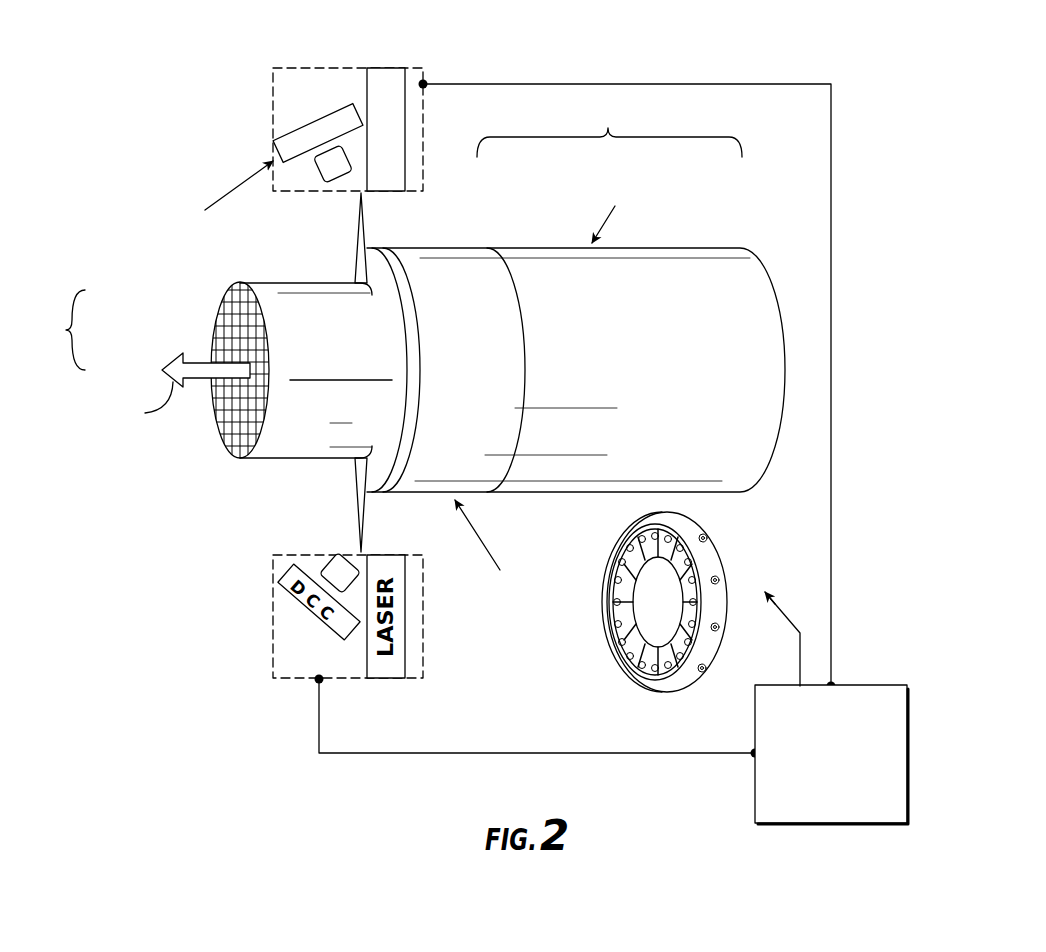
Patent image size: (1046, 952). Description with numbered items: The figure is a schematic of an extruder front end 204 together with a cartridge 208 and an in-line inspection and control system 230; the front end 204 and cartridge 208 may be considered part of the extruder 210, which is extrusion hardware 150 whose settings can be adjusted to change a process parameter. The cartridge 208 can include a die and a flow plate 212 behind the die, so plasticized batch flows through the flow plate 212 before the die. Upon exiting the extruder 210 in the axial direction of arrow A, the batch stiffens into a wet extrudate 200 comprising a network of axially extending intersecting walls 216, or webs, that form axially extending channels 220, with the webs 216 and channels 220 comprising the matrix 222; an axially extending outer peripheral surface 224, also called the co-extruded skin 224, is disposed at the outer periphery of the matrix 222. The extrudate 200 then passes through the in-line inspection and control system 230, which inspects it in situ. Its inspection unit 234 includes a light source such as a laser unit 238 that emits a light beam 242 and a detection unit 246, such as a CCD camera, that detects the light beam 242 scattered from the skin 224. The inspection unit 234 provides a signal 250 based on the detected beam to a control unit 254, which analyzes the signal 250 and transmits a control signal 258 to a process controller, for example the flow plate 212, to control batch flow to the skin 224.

The extrusion hardware 150 is at (761, 579).
The wet extrudate 200 is at (210, 398).
The extruder front end 204 is at (688, 247).
The cartridge 208 is at (462, 247).
The extruder 210 is at (608, 128).
The flow plate 212 is at (650, 693).
The intersecting walls 216 is at (213, 341).
The channels 220 is at (213, 330).
The matrix 222 is at (56, 330).
The outer peripheral surface 224 is at (293, 460).
The in-line inspection and control system 230 is at (205, 136).
The inspection unit 234 is at (268, 127).
The laser unit 238 is at (386, 67).
The light beam 242 is at (355, 278).
The detection unit 246 is at (300, 112).
The signal 250 is at (650, 84).
The control unit 254 is at (831, 754).
The control signal 258 is at (800, 645).